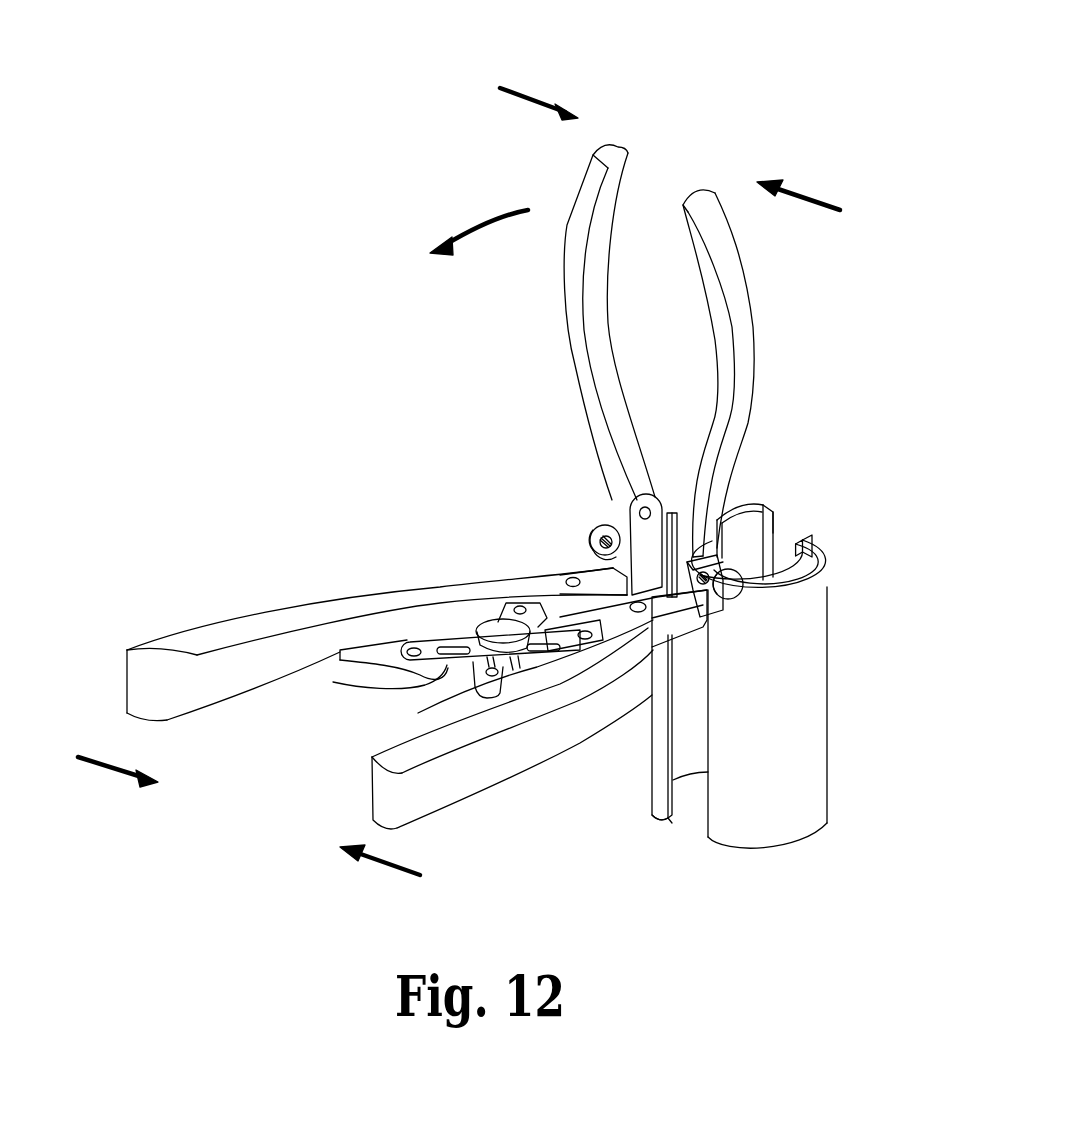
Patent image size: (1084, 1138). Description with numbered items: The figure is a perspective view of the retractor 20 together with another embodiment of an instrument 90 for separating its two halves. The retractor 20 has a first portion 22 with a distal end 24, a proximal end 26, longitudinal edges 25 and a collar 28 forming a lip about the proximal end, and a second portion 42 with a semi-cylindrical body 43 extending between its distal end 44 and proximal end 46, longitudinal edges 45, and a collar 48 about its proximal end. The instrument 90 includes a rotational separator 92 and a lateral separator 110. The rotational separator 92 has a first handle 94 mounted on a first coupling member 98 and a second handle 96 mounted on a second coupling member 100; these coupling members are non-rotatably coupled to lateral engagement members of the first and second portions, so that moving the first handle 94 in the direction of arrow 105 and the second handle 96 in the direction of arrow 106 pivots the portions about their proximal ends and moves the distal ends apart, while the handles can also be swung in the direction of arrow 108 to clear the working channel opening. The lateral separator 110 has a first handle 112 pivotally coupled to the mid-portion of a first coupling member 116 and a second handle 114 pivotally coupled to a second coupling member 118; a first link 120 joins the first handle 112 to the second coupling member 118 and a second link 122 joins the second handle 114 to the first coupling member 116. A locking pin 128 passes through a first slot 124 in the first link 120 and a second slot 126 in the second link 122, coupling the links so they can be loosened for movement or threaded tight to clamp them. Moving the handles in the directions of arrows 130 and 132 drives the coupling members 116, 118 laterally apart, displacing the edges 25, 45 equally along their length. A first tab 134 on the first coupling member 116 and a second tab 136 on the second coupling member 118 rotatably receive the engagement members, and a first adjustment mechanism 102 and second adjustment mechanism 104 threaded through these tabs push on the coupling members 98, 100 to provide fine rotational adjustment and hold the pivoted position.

The retractor 20 is at (873, 688).
The first portion 22 is at (652, 760).
The distal end 24 is at (658, 817).
The longitudinal edges 25 is at (670, 829).
The proximal end 26 is at (768, 538).
The collar 28 is at (757, 516).
The second portion 42 is at (827, 745).
The semi-cylindrical body 43 is at (772, 759).
The distal end 44 is at (750, 850).
The longitudinal edges 45 is at (704, 828).
The proximal end 46 is at (828, 594).
The collar 48 is at (826, 548).
The instrument 90 is at (482, 474).
The rotational separator 92 is at (757, 316).
The first handle 94 is at (572, 288).
The second handle 96 is at (715, 300).
The first coupling member 98 is at (646, 496).
The second coupling member 100 is at (668, 512).
The first adjustment mechanism 102 is at (595, 528).
The second adjustment mechanism 104 is at (725, 572).
The arrow 105 is at (535, 92).
The arrow 106 is at (805, 195).
The arrow 108 is at (500, 203).
The lateral separator 110 is at (489, 800).
The first handle 112 is at (172, 696).
The second handle 114 is at (372, 757).
The first coupling member 116 is at (599, 572).
The second coupling member 118 is at (670, 624).
The first link 120 is at (398, 686).
The second link 122 is at (597, 719).
The first slot 124 is at (430, 640).
The second slot 126 is at (418, 712).
The locking pin 128 is at (489, 627).
The arrow 130 is at (82, 757).
The arrow 132 is at (400, 876).
The first tab 134 is at (613, 557).
The second tab 136 is at (710, 609).